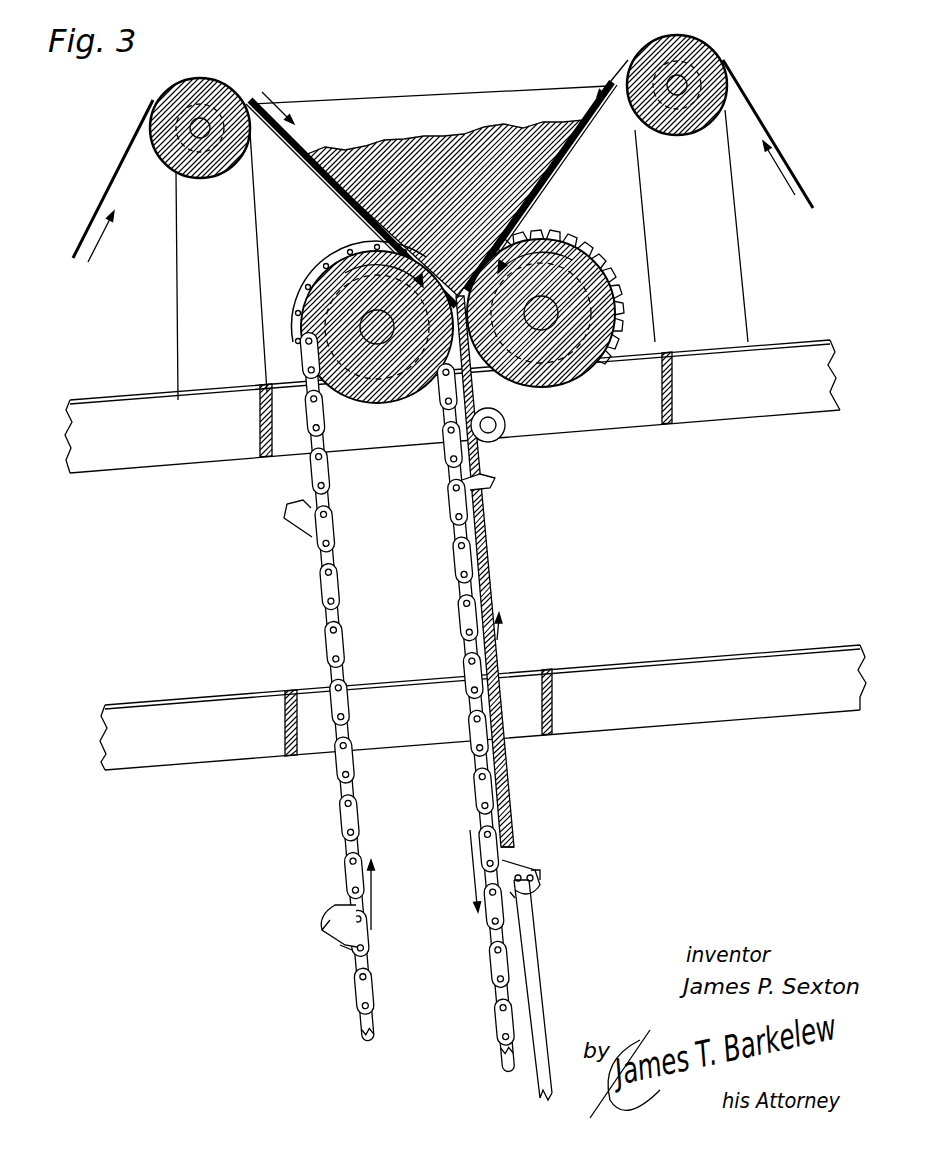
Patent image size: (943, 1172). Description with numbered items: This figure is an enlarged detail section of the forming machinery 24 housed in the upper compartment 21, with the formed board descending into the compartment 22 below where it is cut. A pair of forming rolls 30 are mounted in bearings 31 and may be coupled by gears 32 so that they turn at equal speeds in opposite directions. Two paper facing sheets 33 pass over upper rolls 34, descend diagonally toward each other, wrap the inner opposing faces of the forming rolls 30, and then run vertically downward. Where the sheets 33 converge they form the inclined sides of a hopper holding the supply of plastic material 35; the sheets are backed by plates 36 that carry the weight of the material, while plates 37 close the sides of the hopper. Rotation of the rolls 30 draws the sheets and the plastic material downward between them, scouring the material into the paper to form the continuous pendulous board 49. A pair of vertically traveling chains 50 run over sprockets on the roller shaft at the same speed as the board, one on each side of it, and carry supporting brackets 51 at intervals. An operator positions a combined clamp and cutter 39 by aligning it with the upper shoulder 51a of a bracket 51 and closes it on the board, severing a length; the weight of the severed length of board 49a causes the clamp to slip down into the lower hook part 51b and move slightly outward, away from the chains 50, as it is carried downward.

The compartment 21 is at (483, 669).
The compartment 22 is at (512, 771).
The forming machinery 24 is at (610, 451).
The forming rolls 30 is at (383, 402).
The bearings 31 is at (313, 280).
The gears 32 is at (618, 262).
The paper facing sheets 33 is at (340, 188).
The rolls 34 is at (203, 80).
The plastic material 35 is at (478, 125).
The plates 36 is at (318, 165).
The plates 37 is at (444, 199).
The clamp and cutter 39 is at (540, 869).
The pendulous board 49 is at (507, 667).
The severed length of board 49a is at (538, 992).
The chains 50 is at (466, 658).
The supporting brackets 51 is at (498, 483).
The upper shoulder 51a is at (348, 950).
The lower hook part 51b is at (322, 932).